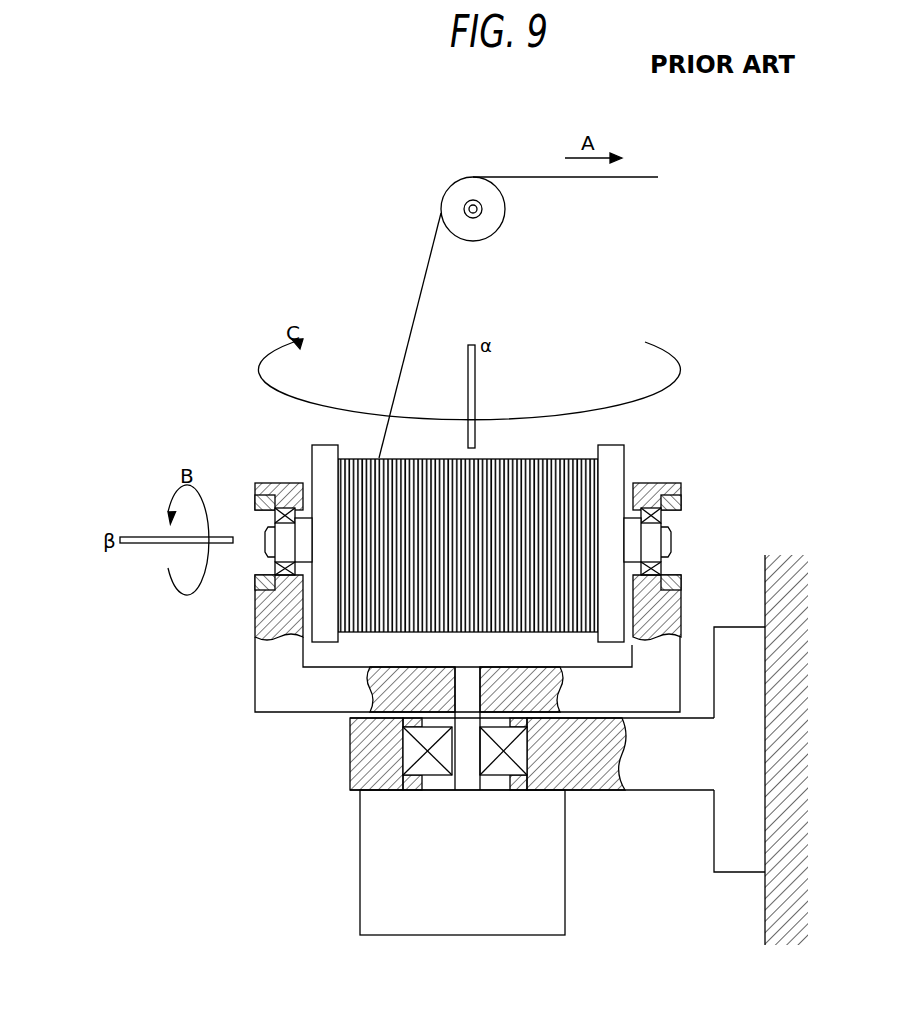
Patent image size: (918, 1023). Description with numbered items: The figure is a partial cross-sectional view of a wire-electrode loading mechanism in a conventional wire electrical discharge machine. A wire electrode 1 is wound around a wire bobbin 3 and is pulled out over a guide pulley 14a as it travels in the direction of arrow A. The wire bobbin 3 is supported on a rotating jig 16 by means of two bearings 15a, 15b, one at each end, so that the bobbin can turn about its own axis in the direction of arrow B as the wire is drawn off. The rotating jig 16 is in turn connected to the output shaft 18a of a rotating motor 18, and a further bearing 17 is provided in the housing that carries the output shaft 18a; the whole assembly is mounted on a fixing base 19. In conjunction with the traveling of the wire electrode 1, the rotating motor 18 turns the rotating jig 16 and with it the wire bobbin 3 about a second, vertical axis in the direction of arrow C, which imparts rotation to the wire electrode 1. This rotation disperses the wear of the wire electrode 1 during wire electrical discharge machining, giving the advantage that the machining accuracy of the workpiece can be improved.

The wire electrode 1 is at (420, 285).
The wire bobbin 3 is at (615, 458).
The guide pulley 14a is at (491, 229).
The bearing 15a is at (256, 567).
The bearing 15b is at (662, 575).
The rotating jig 16 is at (266, 675).
The bearing 17 is at (410, 748).
The rotating motor 18 is at (467, 927).
The output shaft 18a is at (467, 782).
The fixing base 19 is at (738, 865).